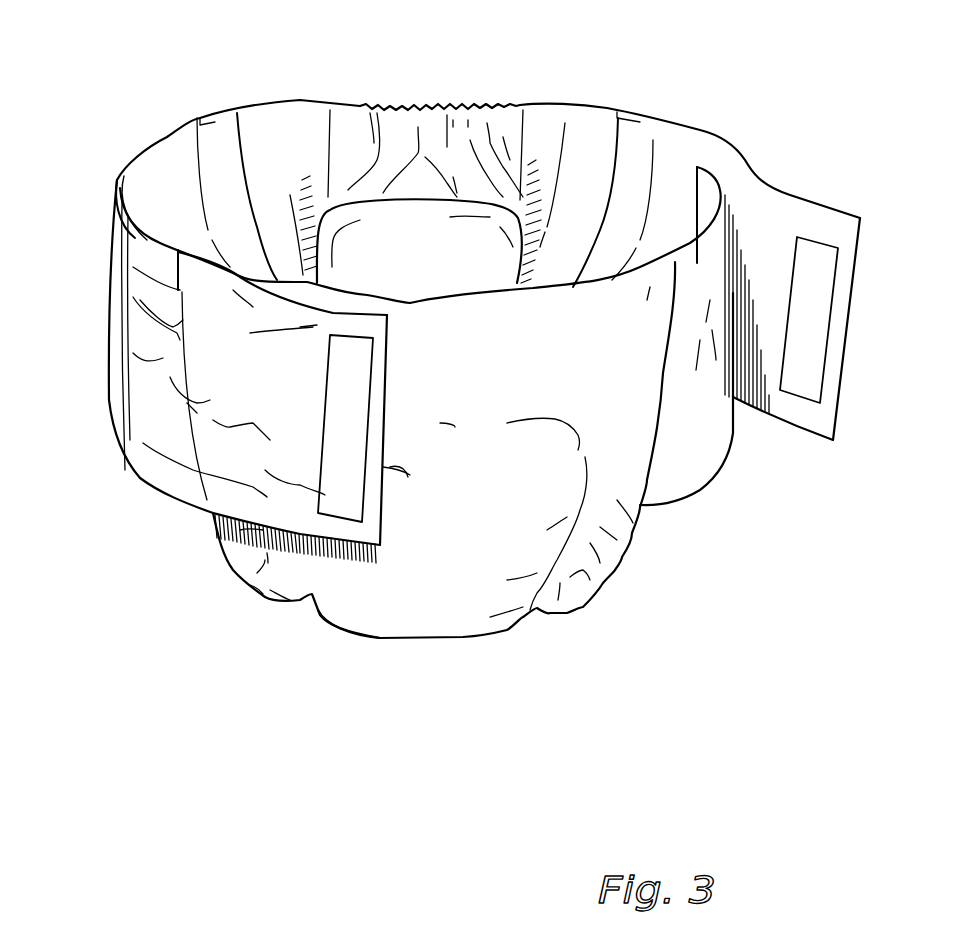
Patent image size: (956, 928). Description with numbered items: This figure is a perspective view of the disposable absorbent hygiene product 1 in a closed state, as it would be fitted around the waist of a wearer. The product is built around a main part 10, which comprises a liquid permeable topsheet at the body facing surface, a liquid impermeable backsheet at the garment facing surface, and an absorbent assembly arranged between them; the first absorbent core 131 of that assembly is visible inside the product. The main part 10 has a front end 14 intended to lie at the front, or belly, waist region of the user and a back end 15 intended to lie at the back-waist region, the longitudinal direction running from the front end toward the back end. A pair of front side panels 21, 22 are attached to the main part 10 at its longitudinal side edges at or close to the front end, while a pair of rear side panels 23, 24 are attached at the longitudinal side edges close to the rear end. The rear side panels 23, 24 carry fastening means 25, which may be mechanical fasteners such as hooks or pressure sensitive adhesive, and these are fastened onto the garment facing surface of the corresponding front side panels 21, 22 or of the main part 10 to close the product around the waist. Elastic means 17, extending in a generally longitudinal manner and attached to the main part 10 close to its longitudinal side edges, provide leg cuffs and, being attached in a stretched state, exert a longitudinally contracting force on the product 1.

The disposable absorbent hygiene product 1 is at (108, 109).
The main part 10 is at (467, 622).
The first absorbent core 131 is at (470, 238).
The front end 14 is at (547, 290).
The back end 15 is at (432, 106).
The elastic means 17 is at (257, 582).
The front side panel 21 is at (735, 293).
The front side panel 22 is at (147, 235).
The rear side panel 23 is at (740, 145).
The rear side panel 24 is at (193, 447).
The fastening means 25 is at (816, 245).